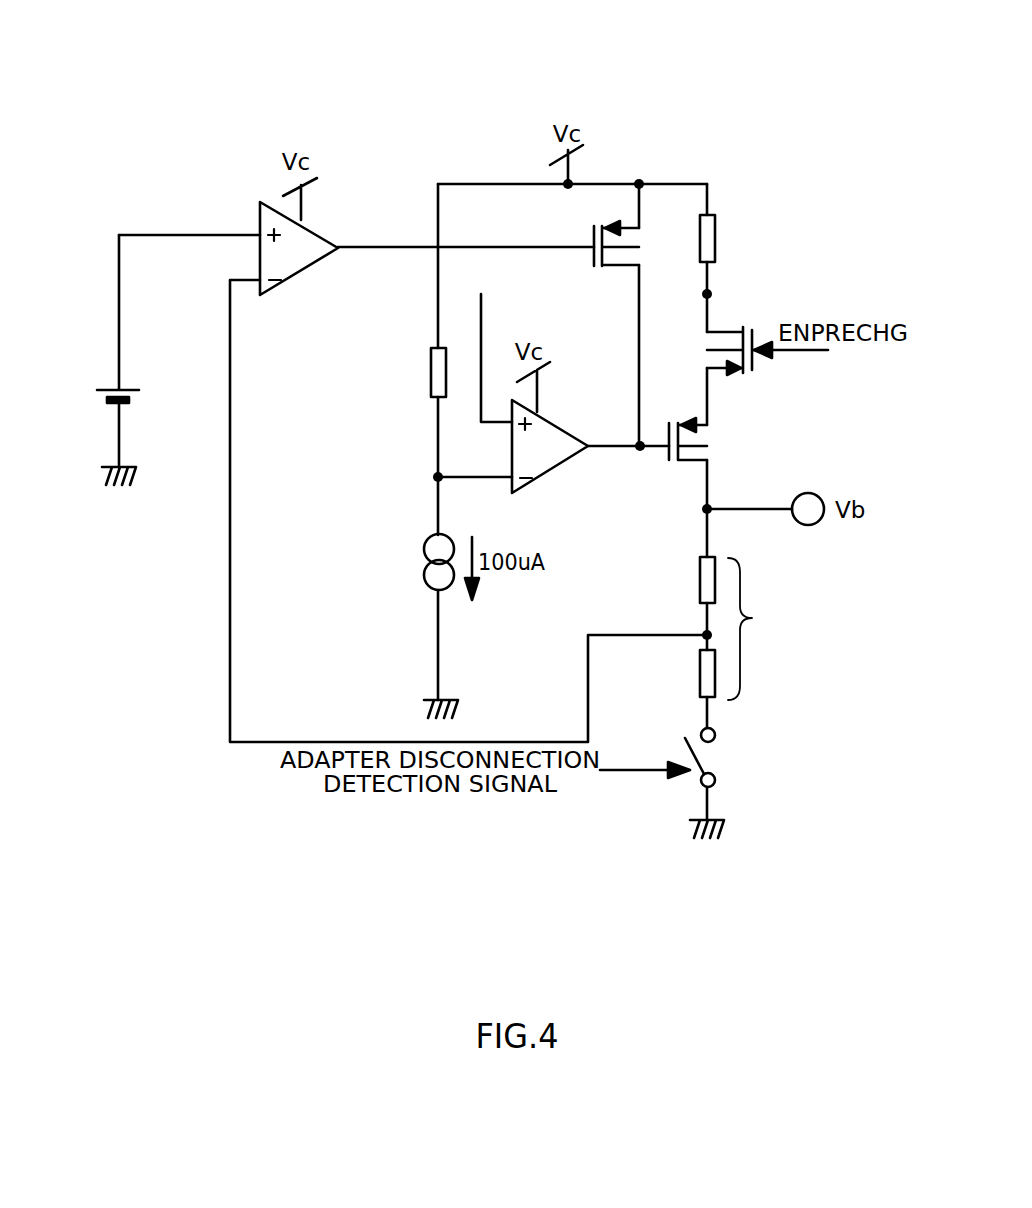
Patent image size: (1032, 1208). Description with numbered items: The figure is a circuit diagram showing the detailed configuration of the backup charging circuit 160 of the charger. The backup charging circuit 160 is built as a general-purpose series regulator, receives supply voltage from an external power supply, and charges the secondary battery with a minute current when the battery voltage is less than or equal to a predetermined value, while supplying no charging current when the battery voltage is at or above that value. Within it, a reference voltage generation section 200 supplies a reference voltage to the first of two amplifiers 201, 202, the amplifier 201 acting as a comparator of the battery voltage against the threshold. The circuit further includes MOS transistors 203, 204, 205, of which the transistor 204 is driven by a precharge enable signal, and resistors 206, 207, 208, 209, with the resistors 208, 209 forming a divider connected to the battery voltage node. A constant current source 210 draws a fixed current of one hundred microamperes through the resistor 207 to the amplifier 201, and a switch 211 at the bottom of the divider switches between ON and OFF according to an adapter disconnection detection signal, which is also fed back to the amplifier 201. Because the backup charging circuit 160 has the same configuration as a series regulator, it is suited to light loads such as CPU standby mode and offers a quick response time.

The backup charging circuit 160 is at (627, 77).
The reference voltage Vref generation section 200 is at (100, 386).
The amplifier 201 is at (258, 218).
The amplifier 202 is at (557, 423).
The MOS transistor 203 is at (637, 252).
The MOS transistor 204 is at (752, 372).
The MOS transistor 205 is at (711, 452).
The resistor 206 is at (717, 221).
The resistor 207 is at (426, 393).
The resistor 208 is at (718, 590).
The resistor 209 is at (718, 675).
The constant current source 210 is at (426, 552).
The switch 211 is at (715, 760).